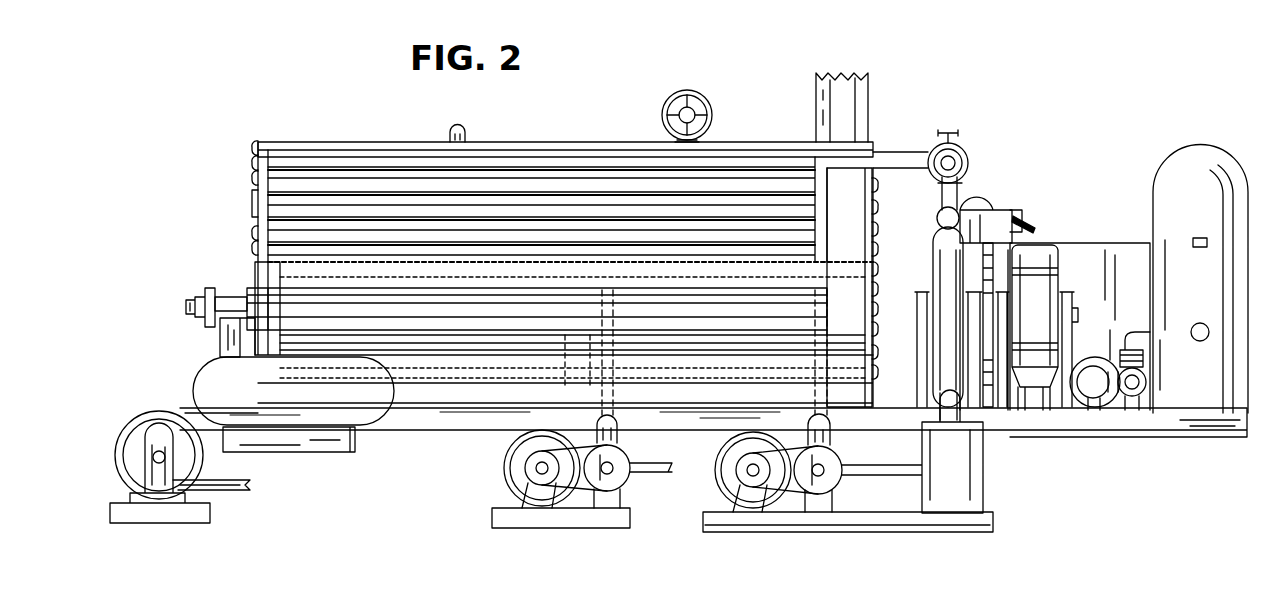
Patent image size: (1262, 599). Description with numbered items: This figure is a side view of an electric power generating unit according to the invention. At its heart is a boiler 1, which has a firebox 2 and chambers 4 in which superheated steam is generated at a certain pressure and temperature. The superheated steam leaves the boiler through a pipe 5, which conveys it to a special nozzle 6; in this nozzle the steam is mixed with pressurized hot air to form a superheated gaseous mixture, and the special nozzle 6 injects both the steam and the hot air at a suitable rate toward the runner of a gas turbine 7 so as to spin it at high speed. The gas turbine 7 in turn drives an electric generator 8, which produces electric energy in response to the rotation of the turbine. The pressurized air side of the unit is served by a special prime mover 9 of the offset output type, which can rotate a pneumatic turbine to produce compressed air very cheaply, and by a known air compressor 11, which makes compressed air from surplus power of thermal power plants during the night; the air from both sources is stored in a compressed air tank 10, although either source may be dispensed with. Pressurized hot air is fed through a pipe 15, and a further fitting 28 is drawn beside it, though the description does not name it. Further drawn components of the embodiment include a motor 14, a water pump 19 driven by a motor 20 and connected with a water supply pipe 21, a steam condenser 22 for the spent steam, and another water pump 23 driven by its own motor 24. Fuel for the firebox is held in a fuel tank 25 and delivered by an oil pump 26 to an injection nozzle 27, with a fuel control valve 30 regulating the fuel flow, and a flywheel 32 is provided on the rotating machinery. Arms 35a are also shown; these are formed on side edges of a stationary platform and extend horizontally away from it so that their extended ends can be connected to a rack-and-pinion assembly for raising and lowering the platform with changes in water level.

The boiler 1 is at (510, 142).
The firebox 2 is at (247, 290).
The chambers 4 is at (568, 185).
The pipe 5 is at (898, 152).
The special nozzle 6 is at (938, 215).
The gas turbine 7 is at (965, 235).
The electric generator 8 is at (1033, 370).
The special prime mover 9 is at (1105, 250).
The compressed air tank 10 is at (1175, 165).
The air compressor 11 is at (1140, 372).
The motor 14 is at (150, 430).
The pipe 15 is at (985, 200).
The water pump 19 is at (618, 438).
The motor 20 is at (508, 468).
The water supply pipe 21 is at (660, 474).
The steam condenser 22 is at (948, 495).
The water pump 23 is at (845, 512).
The motor 24 is at (720, 525).
The fuel tank 25 is at (340, 405).
The oil pump 26 is at (175, 450).
The injection nozzle 27 is at (232, 312).
The fitting 28 is at (1015, 215).
The fuel control valve 30 is at (207, 292).
The flywheel 32 is at (990, 410).
The arms 35a is at (1035, 227).